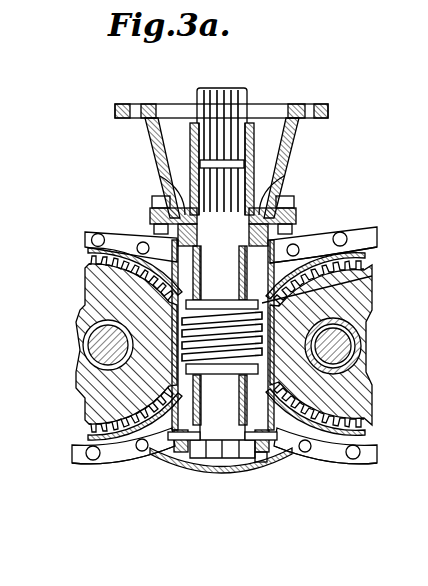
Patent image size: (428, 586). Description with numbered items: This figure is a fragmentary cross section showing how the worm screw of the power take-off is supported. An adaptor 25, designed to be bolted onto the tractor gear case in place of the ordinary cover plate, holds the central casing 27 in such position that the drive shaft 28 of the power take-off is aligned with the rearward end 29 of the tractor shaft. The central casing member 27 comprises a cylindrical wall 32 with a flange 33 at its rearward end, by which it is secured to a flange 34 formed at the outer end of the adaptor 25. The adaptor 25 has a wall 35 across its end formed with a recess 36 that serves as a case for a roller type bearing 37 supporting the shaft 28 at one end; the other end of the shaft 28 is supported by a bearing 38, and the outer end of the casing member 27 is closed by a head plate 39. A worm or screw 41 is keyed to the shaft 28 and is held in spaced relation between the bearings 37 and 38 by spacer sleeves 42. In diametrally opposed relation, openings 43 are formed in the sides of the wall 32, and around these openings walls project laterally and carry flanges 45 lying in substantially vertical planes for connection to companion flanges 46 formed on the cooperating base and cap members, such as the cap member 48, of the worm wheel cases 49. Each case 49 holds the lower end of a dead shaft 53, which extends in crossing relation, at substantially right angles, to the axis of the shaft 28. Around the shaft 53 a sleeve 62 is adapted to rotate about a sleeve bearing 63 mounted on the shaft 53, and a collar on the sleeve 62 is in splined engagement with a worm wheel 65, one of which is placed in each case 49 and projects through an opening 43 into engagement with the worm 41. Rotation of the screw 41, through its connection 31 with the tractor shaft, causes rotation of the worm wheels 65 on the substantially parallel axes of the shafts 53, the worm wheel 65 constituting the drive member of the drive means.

The adaptor 25 is at (297, 140).
The central casing 27 is at (140, 462).
The drive shaft 28 is at (219, 470).
The rearward end 29 is at (236, 102).
The connection 31 is at (188, 140).
The cylindrical wall 32 is at (160, 232).
The flange 33 is at (288, 222).
The flange 34 is at (290, 205).
The wall 35 is at (158, 172).
The recess 36 is at (285, 168).
The roller type bearing 37 is at (201, 227).
The bearing 38 is at (256, 456).
The head plate 39 is at (234, 470).
The worm 41 is at (226, 332).
The spacer sleeves 42 is at (177, 456).
The openings 43 is at (372, 278).
The flanges 45 is at (285, 240).
The companion flanges 46 is at (303, 462).
The cap member 48 is at (74, 444).
The worm wheel case 49 is at (340, 262).
The dead shaft 53 is at (85, 342).
The sleeve 62 is at (372, 350).
The sleeve bearing 63 is at (375, 377).
The worm wheel 65 is at (76, 392).